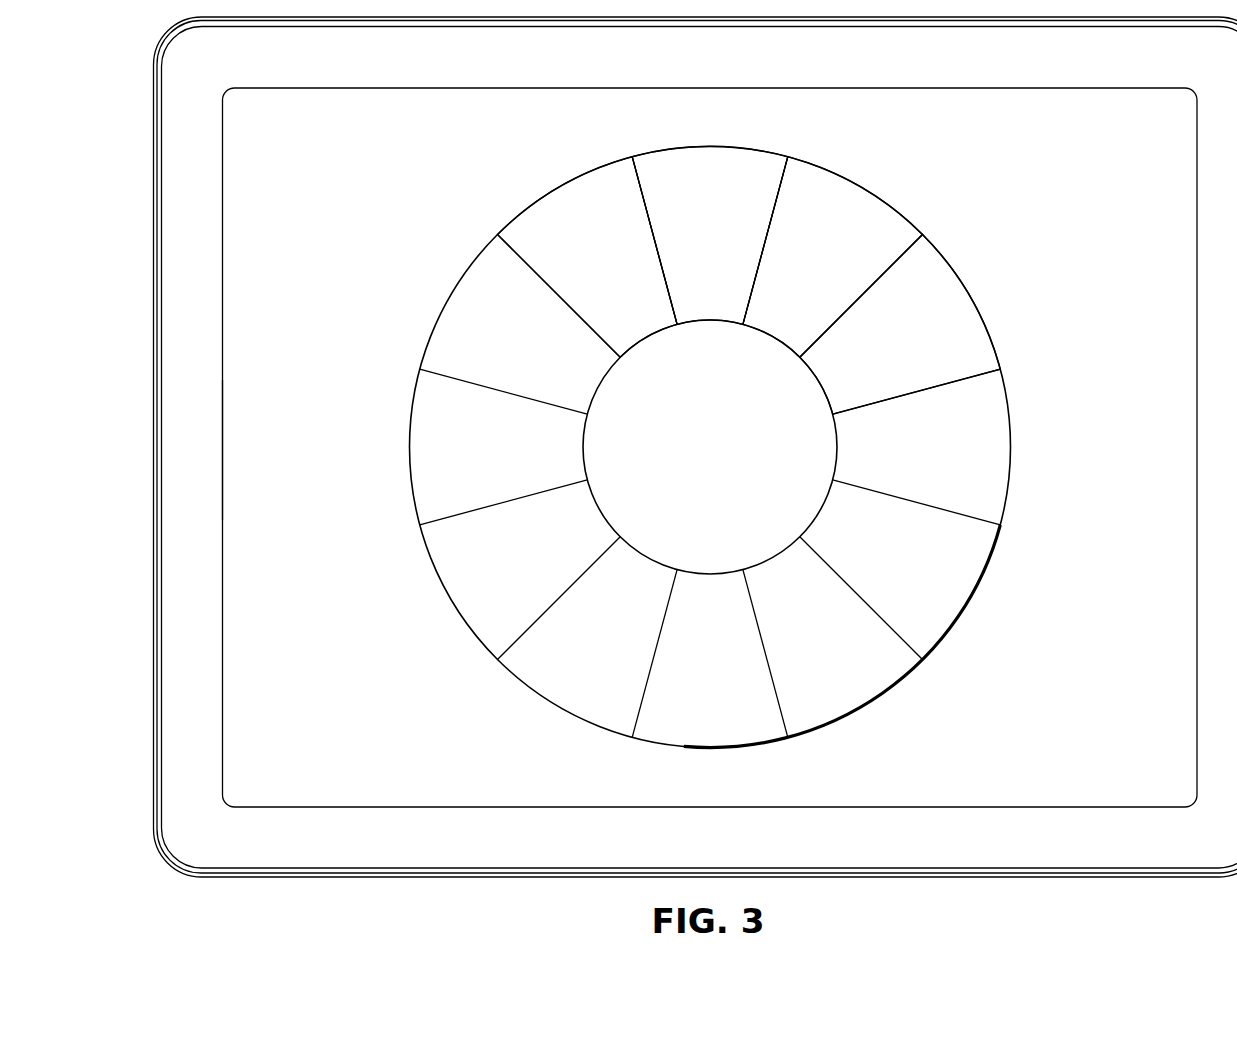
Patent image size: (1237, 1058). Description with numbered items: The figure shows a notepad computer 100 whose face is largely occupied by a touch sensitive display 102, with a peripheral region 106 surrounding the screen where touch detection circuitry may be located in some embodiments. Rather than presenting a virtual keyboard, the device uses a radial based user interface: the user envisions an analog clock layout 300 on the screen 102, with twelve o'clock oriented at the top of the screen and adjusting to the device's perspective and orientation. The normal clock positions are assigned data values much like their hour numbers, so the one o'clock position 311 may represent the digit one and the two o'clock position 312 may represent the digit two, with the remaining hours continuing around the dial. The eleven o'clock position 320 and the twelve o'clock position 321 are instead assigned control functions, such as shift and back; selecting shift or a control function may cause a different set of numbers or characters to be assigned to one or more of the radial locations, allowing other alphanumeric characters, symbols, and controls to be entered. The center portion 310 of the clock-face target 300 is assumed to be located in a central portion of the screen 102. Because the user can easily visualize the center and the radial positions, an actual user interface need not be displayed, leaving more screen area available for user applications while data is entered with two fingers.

The notepad computer 100 is at (146, 165).
The display 102 is at (308, 185).
The peripheral region 106 is at (223, 447).
The analog clock layout 300 is at (690, 425).
The center portion 310 is at (689, 509).
The one o'clock position 311 is at (857, 193).
The two o'clock position 312 is at (962, 298).
The eleven o'clock position 320 is at (563, 193).
The twelve o'clock position 321 is at (662, 158).